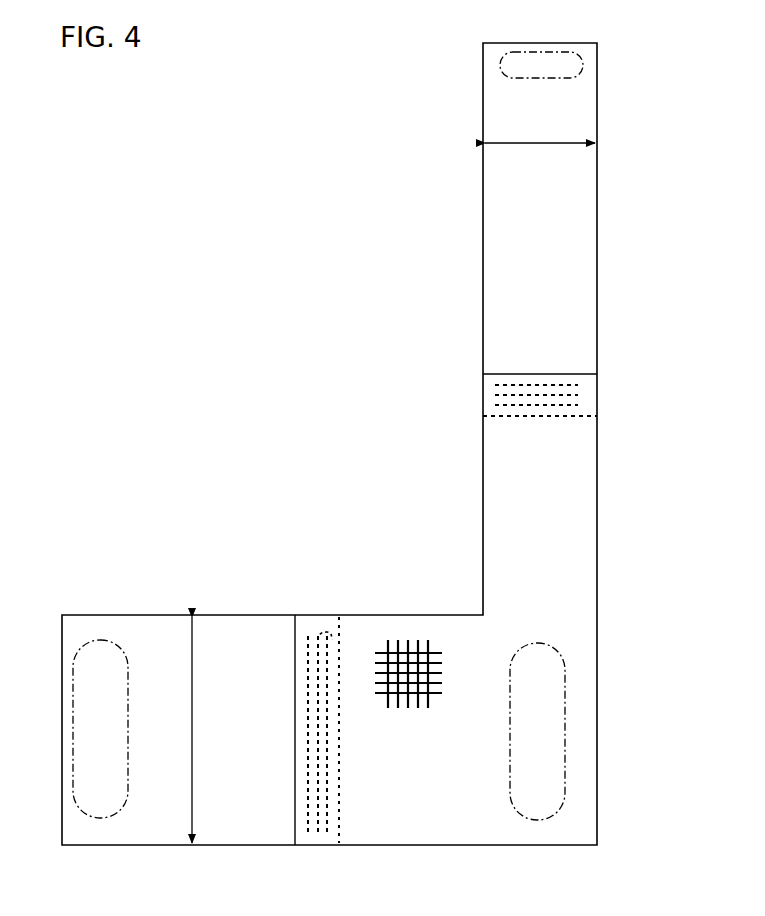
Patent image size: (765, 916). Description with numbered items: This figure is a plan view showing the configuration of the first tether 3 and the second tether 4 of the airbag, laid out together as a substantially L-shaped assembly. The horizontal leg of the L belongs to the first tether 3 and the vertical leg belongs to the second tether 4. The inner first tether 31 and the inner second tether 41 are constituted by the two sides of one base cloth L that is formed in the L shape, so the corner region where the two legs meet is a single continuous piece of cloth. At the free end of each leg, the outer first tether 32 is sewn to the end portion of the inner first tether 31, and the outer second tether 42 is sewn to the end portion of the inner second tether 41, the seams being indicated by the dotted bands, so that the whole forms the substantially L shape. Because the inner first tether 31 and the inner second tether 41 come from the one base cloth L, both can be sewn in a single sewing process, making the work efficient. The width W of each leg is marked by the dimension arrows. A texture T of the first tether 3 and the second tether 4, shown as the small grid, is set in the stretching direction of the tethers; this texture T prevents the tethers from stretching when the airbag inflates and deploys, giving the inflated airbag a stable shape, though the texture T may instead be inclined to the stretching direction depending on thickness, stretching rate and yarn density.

The first tether 3 is at (462, 600).
The second tether 4 is at (470, 47).
The inner first tether 31 is at (377, 840).
The outer first tether 32 is at (133, 838).
The inner second tether 41 is at (585, 507).
The outer second tether 42 is at (587, 258).
The width dimension W is at (372, 501).
The texture T is at (435, 700).
The base cloth L is at (625, 782).